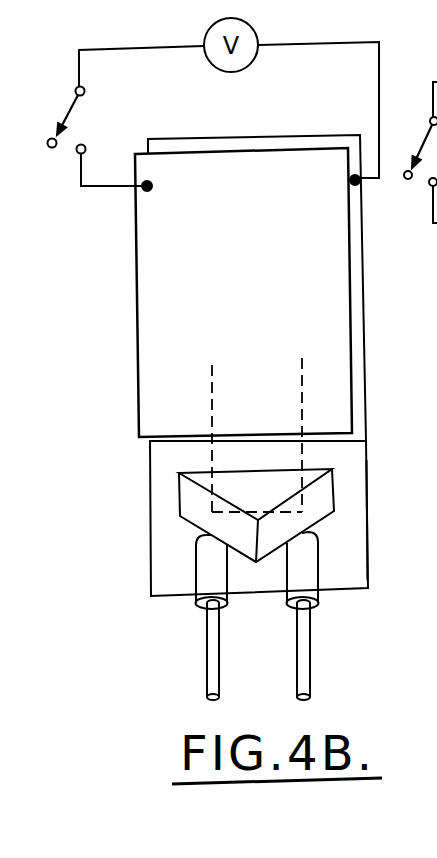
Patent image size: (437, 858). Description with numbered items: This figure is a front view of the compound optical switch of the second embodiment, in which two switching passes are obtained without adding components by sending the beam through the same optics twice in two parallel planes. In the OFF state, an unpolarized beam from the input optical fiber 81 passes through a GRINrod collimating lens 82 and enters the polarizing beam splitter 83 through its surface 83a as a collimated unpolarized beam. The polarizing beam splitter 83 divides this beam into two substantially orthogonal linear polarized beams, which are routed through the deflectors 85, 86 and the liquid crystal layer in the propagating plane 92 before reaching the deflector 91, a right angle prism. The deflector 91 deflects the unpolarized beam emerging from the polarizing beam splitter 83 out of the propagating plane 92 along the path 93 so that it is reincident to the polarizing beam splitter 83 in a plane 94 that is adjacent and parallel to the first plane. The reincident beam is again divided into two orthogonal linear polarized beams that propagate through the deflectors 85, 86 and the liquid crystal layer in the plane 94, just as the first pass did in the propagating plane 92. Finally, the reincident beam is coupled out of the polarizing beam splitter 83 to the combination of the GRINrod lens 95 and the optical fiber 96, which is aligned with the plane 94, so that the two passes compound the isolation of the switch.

The input optical fiber 81 is at (305, 651).
The GRINrod collimating lens 82 is at (316, 557).
The polarizing beam splitter 83 is at (384, 492).
The surface 83a is at (362, 526).
The deflector 85 is at (358, 297).
The deflector 86 is at (152, 289).
The deflector 91 is at (193, 497).
The propagating plane 92 is at (303, 388).
The path 93 is at (281, 513).
The plane 94 is at (212, 405).
The GRINrod lens 95 is at (205, 566).
The optical fiber 96 is at (212, 651).